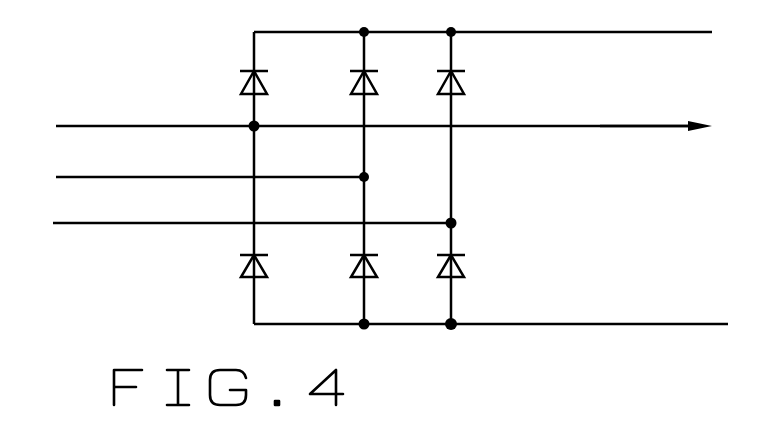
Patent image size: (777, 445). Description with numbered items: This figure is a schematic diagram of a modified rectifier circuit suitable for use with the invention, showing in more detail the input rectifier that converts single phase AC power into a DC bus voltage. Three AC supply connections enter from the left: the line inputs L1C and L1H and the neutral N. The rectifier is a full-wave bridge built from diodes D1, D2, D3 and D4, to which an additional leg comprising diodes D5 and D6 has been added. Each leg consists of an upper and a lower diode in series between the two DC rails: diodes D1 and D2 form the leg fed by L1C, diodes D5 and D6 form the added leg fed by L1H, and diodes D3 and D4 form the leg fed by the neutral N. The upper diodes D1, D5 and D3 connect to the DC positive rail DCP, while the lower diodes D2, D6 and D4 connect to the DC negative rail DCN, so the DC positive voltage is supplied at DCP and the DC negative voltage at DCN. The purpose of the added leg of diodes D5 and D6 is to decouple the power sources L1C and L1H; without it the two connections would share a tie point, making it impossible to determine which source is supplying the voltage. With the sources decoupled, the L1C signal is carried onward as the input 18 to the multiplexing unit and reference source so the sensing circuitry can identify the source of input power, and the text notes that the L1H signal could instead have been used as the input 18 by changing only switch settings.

The diode D1 is at (237, 87).
The diode D2 is at (237, 271).
The diode D3 is at (470, 87).
The diode D4 is at (470, 271).
The diode D5 is at (345, 87).
The diode D6 is at (345, 271).
The input 18 is at (656, 112).
The DC positive voltage DCP is at (484, 16).
The DC negative voltage DCN is at (491, 306).
The L1C connection L1C is at (373, 109).
The L1H connection L1H is at (210, 161).
The neutral connection N is at (252, 209).